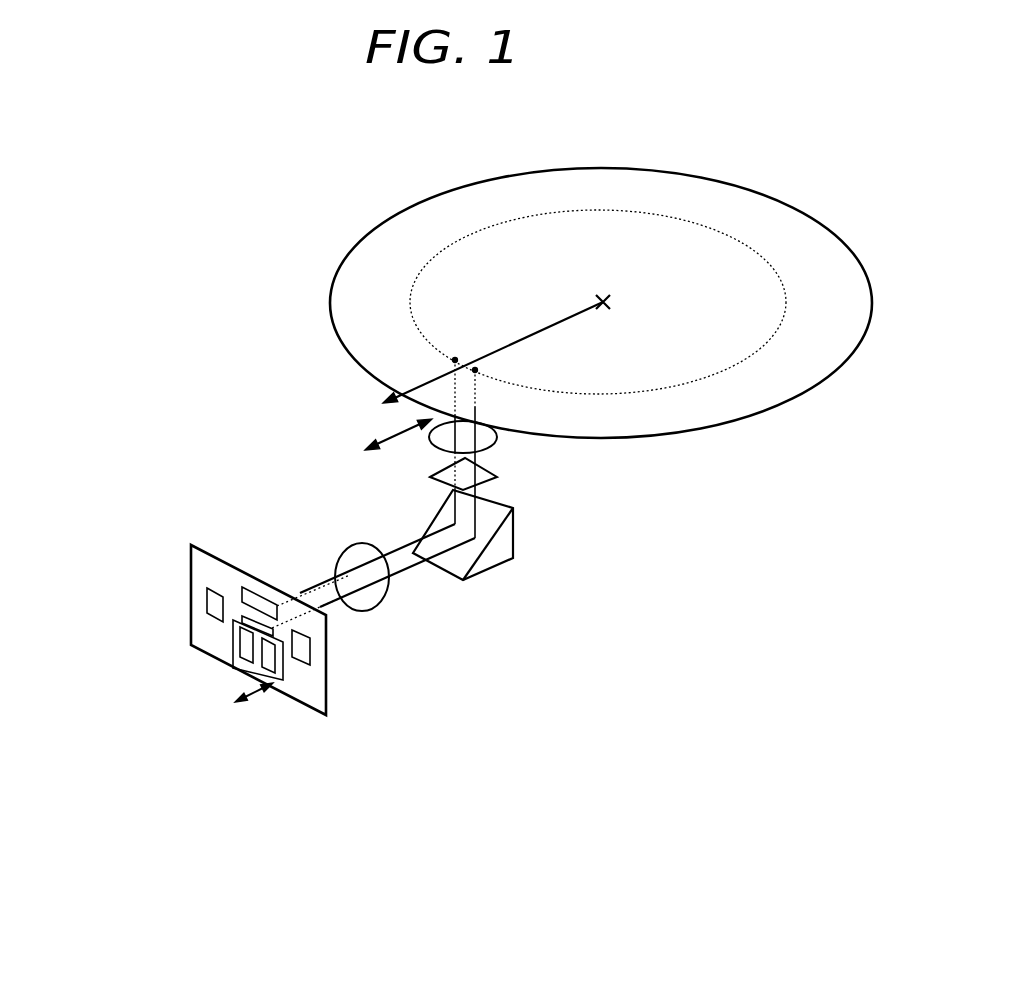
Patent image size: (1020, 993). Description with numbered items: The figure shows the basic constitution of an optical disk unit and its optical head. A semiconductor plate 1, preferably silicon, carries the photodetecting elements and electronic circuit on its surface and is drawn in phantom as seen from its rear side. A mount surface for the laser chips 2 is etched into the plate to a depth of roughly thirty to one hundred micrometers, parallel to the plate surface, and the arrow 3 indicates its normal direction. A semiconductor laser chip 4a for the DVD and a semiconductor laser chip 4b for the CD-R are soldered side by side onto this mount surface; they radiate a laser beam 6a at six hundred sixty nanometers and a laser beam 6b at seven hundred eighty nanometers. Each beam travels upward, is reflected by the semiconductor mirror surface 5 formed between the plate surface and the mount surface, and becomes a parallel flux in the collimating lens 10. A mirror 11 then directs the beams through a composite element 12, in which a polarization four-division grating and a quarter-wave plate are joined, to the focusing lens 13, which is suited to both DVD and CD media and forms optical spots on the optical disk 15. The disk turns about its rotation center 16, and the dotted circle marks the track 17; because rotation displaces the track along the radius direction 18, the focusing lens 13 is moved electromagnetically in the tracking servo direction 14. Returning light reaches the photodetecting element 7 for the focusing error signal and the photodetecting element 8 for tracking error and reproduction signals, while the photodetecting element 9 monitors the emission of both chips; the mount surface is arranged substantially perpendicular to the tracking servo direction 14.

The semiconductor plate 1 is at (327, 630).
The mount surface for laser chip 2 is at (285, 668).
The normal direction 3 is at (257, 693).
The semiconductor laser chip 4a is at (227, 643).
The semiconductor laser chip 4b is at (250, 648).
The semiconductor mirror surface 5 is at (200, 603).
The laser beam 6a is at (320, 580).
The laser beam 6b is at (407, 562).
The photodetecting element 7 is at (312, 653).
The photodetecting element 8 is at (207, 596).
The photodetecting element 9 is at (247, 583).
The collimating lens 10 is at (350, 547).
The mirror 11 is at (495, 566).
The composite element 12 is at (498, 478).
The focusing lens 13 is at (498, 438).
The tracking servo direction 14 is at (363, 448).
The optical disk 15 is at (357, 240).
The optical disk rotation center 16 is at (605, 298).
The track 17 is at (668, 388).
The optical disk radius direction 18 is at (385, 401).